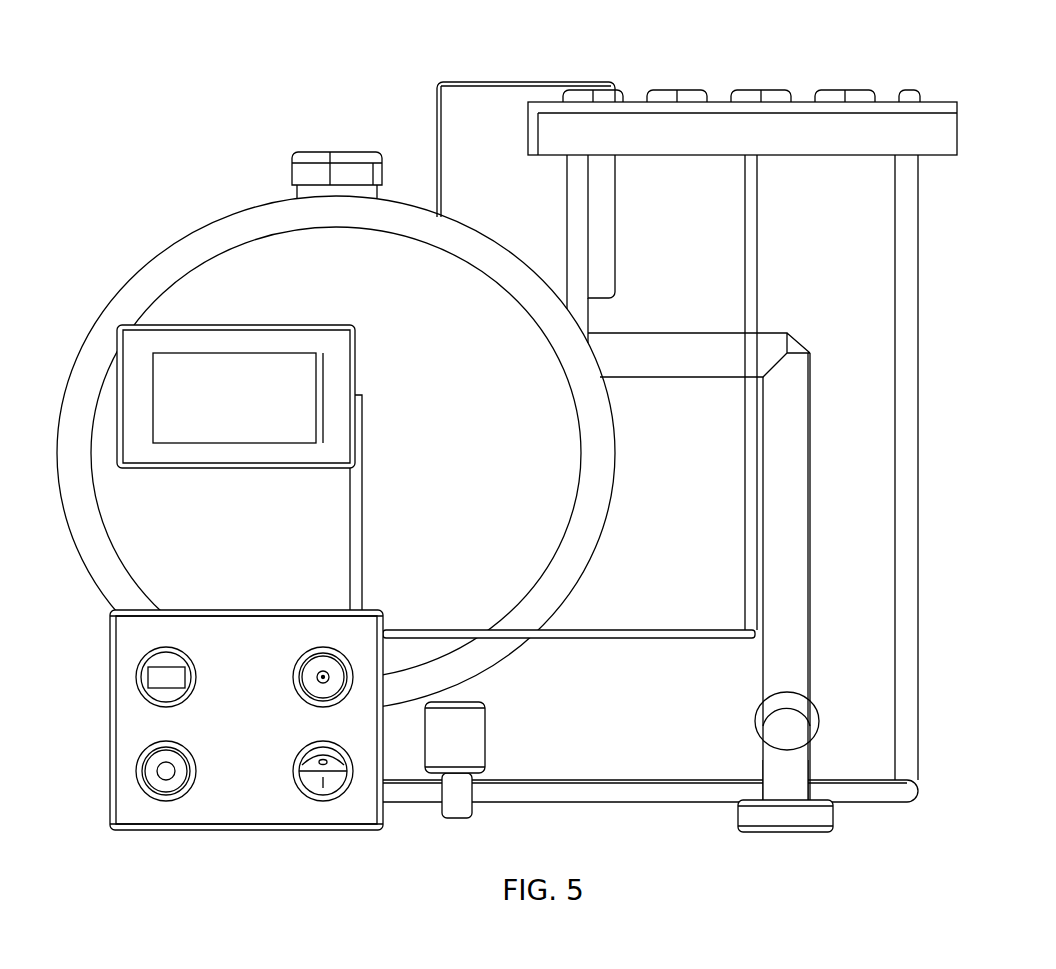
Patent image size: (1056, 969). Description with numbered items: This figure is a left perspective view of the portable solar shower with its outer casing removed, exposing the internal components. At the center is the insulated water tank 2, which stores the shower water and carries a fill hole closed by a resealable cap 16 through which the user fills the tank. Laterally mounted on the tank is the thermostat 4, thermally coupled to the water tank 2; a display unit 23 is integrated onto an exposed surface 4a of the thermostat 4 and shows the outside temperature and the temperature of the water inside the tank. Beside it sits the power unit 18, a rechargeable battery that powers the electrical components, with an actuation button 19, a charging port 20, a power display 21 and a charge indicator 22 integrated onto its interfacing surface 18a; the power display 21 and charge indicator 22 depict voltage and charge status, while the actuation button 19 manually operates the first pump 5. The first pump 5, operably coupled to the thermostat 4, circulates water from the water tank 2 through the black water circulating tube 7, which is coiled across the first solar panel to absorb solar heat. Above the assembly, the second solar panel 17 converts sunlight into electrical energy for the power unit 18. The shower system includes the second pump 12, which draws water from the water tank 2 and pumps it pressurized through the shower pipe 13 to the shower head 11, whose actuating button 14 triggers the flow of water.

The water tank 2 is at (603, 490).
The thermostat 4 is at (263, 422).
The exposed surface 4a is at (332, 378).
The first pump 5 is at (475, 735).
The water circulating tube 7 is at (823, 96).
The shower head 11 is at (793, 822).
The second pump 12 is at (480, 100).
The shower pipe 13 is at (790, 545).
The actuating button 14 is at (757, 720).
The resealable cap 16 is at (347, 175).
The second solar panel 17 is at (943, 137).
The power unit 18 is at (214, 715).
The interfacing surface 18a is at (130, 738).
The actuation button 19 is at (328, 800).
The charging port 20 is at (318, 660).
The power display 21 is at (170, 660).
The charge indicator 22 is at (166, 800).
The display unit 23 is at (290, 368).